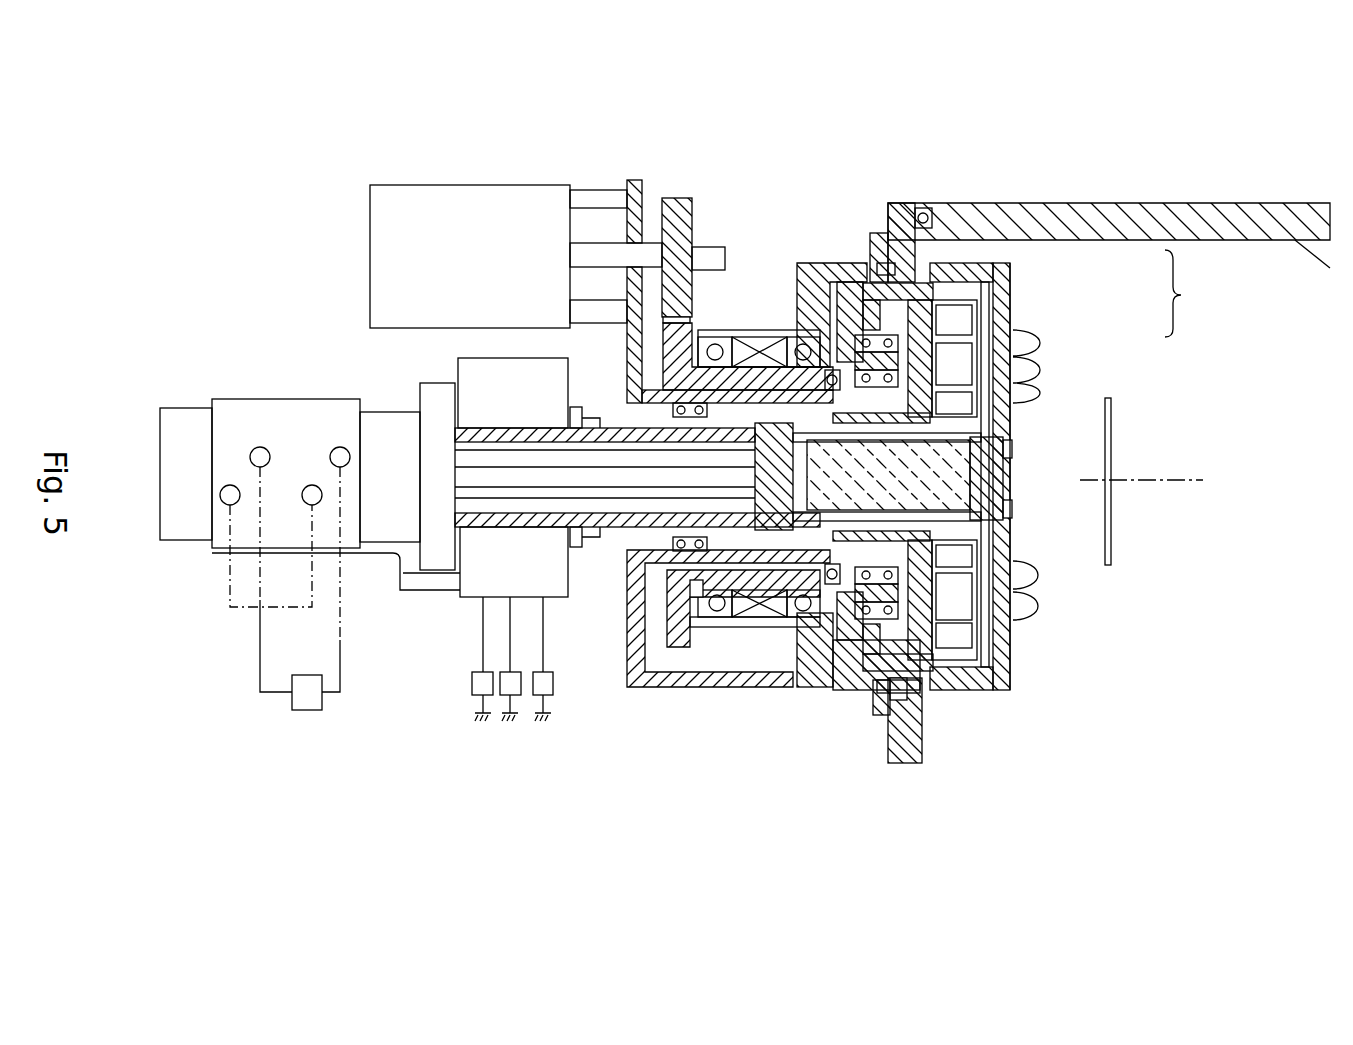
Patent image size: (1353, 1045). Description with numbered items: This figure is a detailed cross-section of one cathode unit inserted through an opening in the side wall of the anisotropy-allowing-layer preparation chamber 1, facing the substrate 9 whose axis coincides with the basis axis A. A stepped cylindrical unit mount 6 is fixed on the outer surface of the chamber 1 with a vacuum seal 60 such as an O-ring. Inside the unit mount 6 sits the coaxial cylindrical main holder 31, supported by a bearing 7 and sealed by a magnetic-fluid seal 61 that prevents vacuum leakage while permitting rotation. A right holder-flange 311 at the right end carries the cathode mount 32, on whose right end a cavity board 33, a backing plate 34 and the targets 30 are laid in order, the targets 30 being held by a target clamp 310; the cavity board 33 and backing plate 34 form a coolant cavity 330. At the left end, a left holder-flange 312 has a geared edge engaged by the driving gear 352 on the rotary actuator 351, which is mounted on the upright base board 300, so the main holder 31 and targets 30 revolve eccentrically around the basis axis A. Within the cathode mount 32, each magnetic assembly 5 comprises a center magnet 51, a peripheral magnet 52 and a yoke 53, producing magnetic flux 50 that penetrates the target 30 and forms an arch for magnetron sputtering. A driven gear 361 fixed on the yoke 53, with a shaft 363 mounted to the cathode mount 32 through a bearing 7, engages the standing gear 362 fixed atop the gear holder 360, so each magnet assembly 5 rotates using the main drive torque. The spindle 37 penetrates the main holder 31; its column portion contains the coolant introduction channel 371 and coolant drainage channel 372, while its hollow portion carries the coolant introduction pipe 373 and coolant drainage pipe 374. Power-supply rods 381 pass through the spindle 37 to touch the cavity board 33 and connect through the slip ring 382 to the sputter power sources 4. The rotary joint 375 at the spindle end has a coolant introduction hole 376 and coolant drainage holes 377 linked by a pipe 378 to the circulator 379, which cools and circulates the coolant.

The anisotropy-allowing-layer preparation chamber 1 is at (1195, 233).
The sputter power source 4 is at (472, 685).
The magnetic assembly 5 is at (1067, 455).
The unit mount 6 is at (845, 680).
The bearing 7 is at (833, 377).
The substrate 9 is at (1112, 400).
The target 30 is at (1010, 420).
The main holder 31 is at (773, 430).
The cathode mount 32 is at (955, 272).
The cavity board 33 is at (983, 280).
The backing plate 34 is at (1000, 272).
The spindle 37 is at (770, 345).
The magnetic flux 50 is at (1040, 372).
The center magnet 51 is at (960, 322).
The peripheral magnet 52 is at (950, 302).
The yoke 53 is at (985, 283).
The vacuum seal 60 is at (890, 700).
The magnetic-fluid seal 61 is at (745, 612).
The base board 300 is at (636, 180).
The target clamp 310 is at (1010, 288).
The right holder-flange 311 is at (852, 293).
The left holder-flange 312 is at (677, 348).
The cavity 330 is at (1012, 548).
The rotary actuator 351 is at (422, 193).
The driving gear 352 is at (688, 225).
The gear holder 360 is at (745, 420).
The driven gear 361 is at (935, 700).
The standing gear 362 is at (880, 690).
The shaft 363 is at (880, 700).
The coolant introduction channel 371 is at (1005, 464).
The coolant drainage channel 372 is at (655, 690).
The coolant introduction pipe 373 is at (477, 460).
The coolant drainage pipe 374 is at (483, 492).
The rotary joint 375 is at (260, 415).
The coolant introduction hole 376 is at (337, 447).
The coolant drainage hole 377 is at (250, 447).
The pipe 378 is at (258, 640).
The circulator 379 is at (303, 712).
The power-supply rod 381 is at (655, 433).
The slip ring 382 is at (473, 588).
The basis axis A is at (1190, 475).